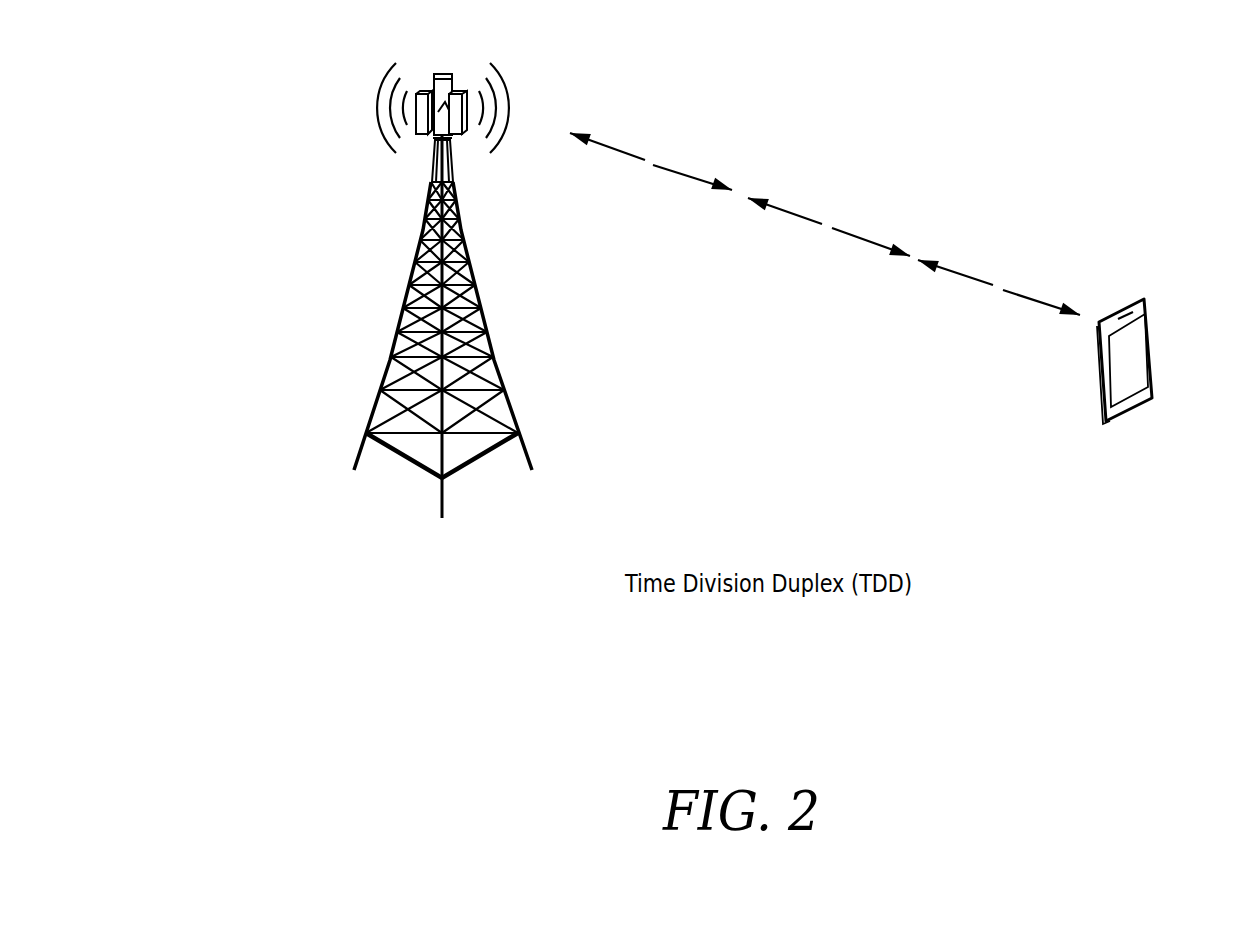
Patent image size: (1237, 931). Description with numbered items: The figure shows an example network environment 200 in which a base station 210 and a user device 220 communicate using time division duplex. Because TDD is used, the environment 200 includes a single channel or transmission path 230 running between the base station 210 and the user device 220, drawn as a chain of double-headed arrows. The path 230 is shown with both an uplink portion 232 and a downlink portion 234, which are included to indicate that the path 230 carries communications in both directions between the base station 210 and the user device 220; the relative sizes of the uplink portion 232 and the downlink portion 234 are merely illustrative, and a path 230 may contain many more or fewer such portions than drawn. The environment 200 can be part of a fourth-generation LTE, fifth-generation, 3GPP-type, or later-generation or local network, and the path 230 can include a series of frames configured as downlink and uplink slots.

The environment 200 is at (218, 140).
The base station 210 is at (506, 400).
The user device 220 is at (1145, 300).
The path 230 is at (897, 212).
The uplink portion 232 is at (607, 148).
The downlink portion 234 is at (703, 177).